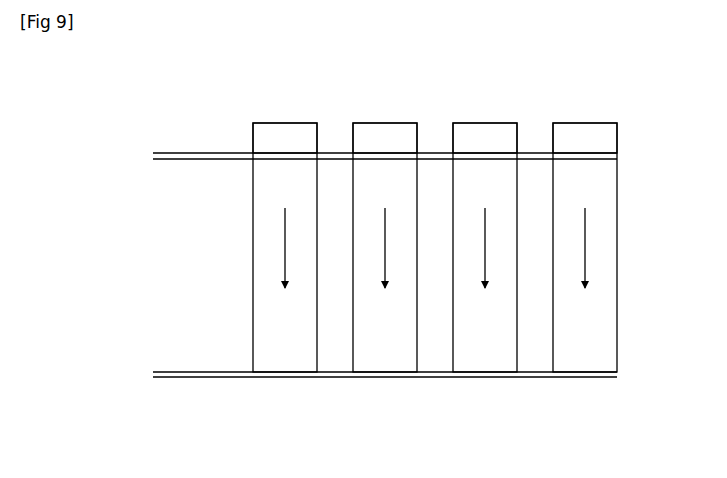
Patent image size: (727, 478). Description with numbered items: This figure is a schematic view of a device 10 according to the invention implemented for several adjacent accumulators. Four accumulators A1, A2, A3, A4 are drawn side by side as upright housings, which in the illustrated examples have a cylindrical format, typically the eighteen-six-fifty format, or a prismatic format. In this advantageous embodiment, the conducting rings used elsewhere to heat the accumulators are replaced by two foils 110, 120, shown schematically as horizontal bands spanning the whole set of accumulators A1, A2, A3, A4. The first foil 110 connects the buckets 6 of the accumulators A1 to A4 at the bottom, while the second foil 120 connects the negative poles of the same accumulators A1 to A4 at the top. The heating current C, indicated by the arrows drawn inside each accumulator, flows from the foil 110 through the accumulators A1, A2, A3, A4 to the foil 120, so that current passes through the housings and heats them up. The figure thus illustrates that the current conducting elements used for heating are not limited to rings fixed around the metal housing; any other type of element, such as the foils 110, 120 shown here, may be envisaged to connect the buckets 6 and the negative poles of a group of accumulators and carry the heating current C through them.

The bucket 6 is at (285, 122).
The device 10 is at (171, 275).
The foil 110 is at (153, 372).
The foil 120 is at (153, 153).
The accumulator A1 is at (275, 354).
The accumulator A2 is at (383, 353).
The accumulator A3 is at (485, 351).
The accumulator A4 is at (587, 351).
The heating current C is at (591, 262).